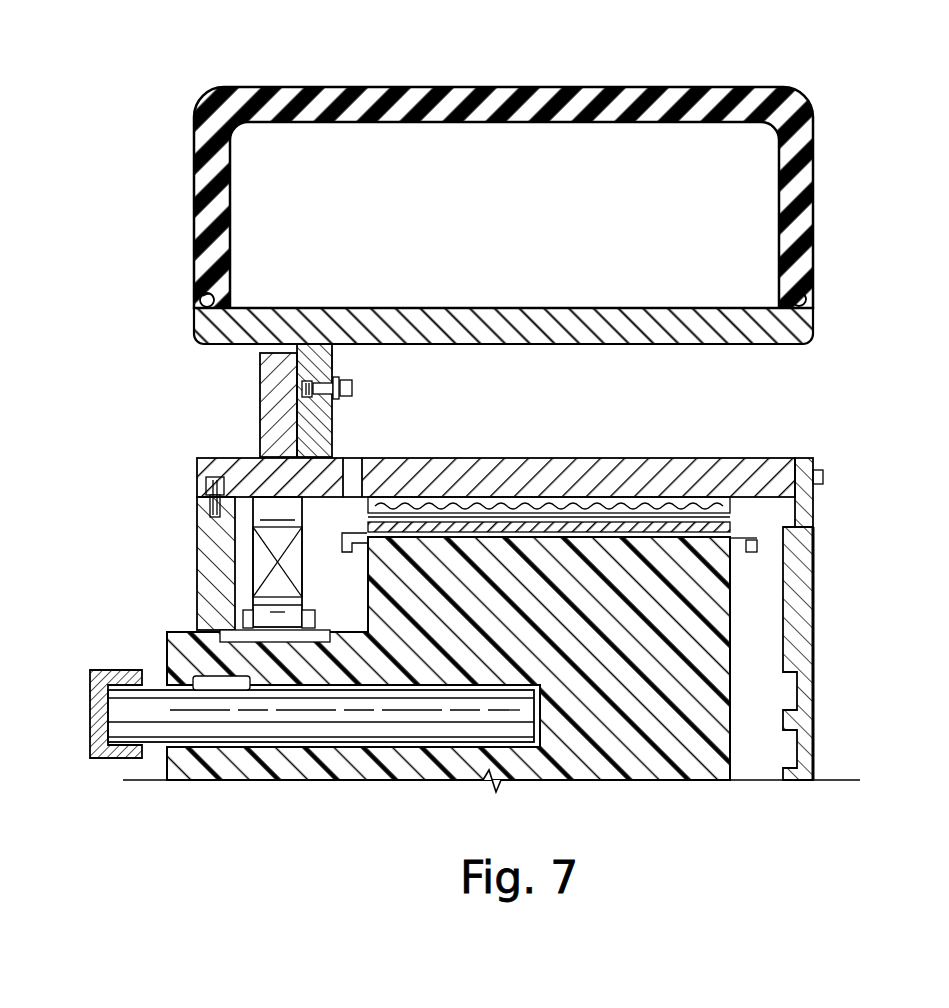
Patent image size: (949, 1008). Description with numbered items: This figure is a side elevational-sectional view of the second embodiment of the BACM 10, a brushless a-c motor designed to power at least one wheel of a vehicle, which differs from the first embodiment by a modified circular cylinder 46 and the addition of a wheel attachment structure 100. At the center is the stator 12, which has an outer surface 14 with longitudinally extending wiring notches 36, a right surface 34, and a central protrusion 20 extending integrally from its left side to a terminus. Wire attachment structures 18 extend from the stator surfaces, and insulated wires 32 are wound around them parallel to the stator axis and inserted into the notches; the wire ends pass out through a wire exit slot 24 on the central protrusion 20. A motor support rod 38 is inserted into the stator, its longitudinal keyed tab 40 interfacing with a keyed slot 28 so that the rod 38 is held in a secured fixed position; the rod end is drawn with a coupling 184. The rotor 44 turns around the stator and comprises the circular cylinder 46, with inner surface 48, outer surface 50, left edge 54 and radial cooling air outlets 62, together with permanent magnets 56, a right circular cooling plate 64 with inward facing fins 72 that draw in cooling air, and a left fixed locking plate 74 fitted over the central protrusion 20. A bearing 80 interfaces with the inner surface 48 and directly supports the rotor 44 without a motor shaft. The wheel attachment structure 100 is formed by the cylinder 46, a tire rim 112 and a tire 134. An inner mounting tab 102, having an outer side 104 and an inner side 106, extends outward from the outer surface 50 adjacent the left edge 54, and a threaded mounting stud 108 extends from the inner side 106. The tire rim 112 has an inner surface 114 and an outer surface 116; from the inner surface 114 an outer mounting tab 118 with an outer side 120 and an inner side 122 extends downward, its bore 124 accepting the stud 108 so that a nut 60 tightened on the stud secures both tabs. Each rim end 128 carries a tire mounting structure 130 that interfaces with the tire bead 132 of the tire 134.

The BACM 10 is at (495, 191).
The wheel attachment structure 100 is at (760, 68).
The tire 134 is at (210, 157).
The tire bead 132 is at (198, 287).
The rim end 128 is at (495, 312).
The tire mounting structure 130 is at (200, 302).
The tire rim 112 is at (450, 322).
The outer surface 116 is at (652, 322).
The inner surface 114 is at (687, 350).
The outer mounting tab 118 is at (267, 357).
The outer side 120 is at (267, 357).
The inner mounting tab 102 is at (313, 360).
The outer side 104 is at (198, 405).
The bore 124 is at (262, 383).
The inner side 122 is at (335, 360).
The nut 60 is at (550, 444).
The threaded mounting stud 108 is at (550, 444).
The inner side 106 is at (348, 388).
The rotor 44 is at (523, 446).
The circular cylinder 46 is at (523, 446).
The outer surface 50 is at (523, 446).
The left edge 54 is at (523, 446).
The cooling air outlets 62 is at (765, 458).
The inner surface 48 is at (805, 500).
The permanent magnets 56 is at (650, 498).
The wiring notches 36 is at (580, 530).
The left fixed locking plate 74 is at (213, 598).
The bearing 80 is at (275, 542).
The stator 12 is at (486, 686).
The outer surface 14 is at (486, 686).
The central protrusion 20 is at (486, 686).
The wire exit slot 24 is at (486, 686).
The right surface 34 is at (652, 760).
The motor support rod 38 is at (321, 756).
The keyed slot 28 is at (321, 756).
The keyed tab 40 is at (417, 714).
The end coupler 184 is at (100, 762).
The wire attachment structures 18 is at (355, 535).
The insulated wires 32 is at (832, 653).
The right circular cooling plate 64 is at (832, 653).
The inward facing fins 72 is at (770, 762).